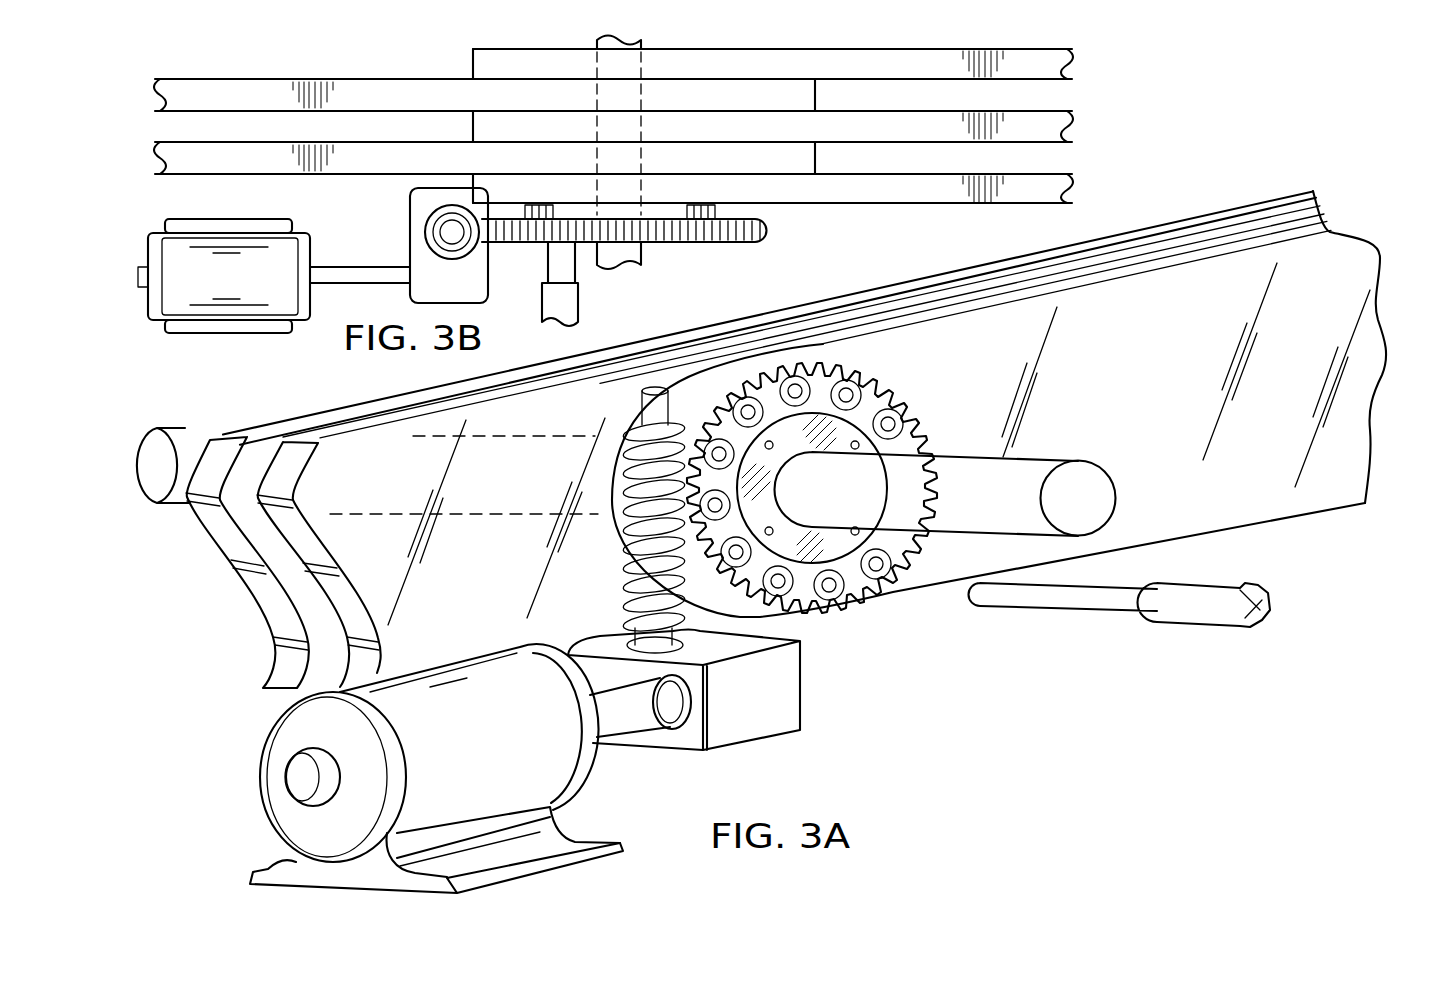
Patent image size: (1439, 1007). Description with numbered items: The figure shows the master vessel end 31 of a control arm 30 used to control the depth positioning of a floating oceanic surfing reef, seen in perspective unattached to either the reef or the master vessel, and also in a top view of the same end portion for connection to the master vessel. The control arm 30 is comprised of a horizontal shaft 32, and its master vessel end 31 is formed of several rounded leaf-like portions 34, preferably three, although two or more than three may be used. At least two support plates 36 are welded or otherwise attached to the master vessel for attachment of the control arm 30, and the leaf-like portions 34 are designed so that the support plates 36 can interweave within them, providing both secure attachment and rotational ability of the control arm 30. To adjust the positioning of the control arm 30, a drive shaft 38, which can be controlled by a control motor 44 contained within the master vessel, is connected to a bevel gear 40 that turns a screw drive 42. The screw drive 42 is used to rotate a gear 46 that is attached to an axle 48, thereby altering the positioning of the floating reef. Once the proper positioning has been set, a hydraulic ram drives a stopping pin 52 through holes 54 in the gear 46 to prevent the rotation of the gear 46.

In FIG. 3A, the control arm 30 is at (1331, 195).
In FIG. 3B, the control arm 30 is at (800, 215).
In FIG. 3A, the master vessel end 31 is at (940, 333).
In FIG. 3B, the master vessel end 31 is at (803, 62).
In FIG. 3A, the horizontal shaft 32 is at (1225, 270).
In FIG. 3B, the horizontal shaft 32 is at (613, 126).
In FIG. 3A, the leaf-like portions 34 is at (835, 320).
In FIG. 3B, the leaf-like portions 34 is at (1074, 178).
In FIG. 3A, the support plates 36 is at (280, 603).
In FIG. 3B, the support plates 36 is at (252, 98).
In FIG. 3A, the drive shaft 38 is at (635, 718).
In FIG. 3B, the drive shaft 38 is at (335, 272).
In FIG. 3A, the bevel gear 40 is at (773, 712).
In FIG. 3B, the bevel gear 40 is at (468, 287).
In FIG. 3A, the screw drive 42 is at (627, 603).
In FIG. 3B, the screw drive 42 is at (443, 220).
In FIG. 3A, the control motor 44 is at (263, 762).
In FIG. 3B, the control motor 44 is at (227, 283).
In FIG. 3A, the gear 46 is at (823, 617).
In FIG. 3B, the gear 46 is at (687, 243).
In FIG. 3A, the axle 48 is at (1070, 487).
In FIG. 3B, the axle 48 is at (643, 268).
In FIG. 3A, the stopping pin 52 is at (1086, 600).
In FIG. 3B, the stopping pin 52 is at (567, 307).
In FIG. 3A, the holes 54 is at (876, 562).